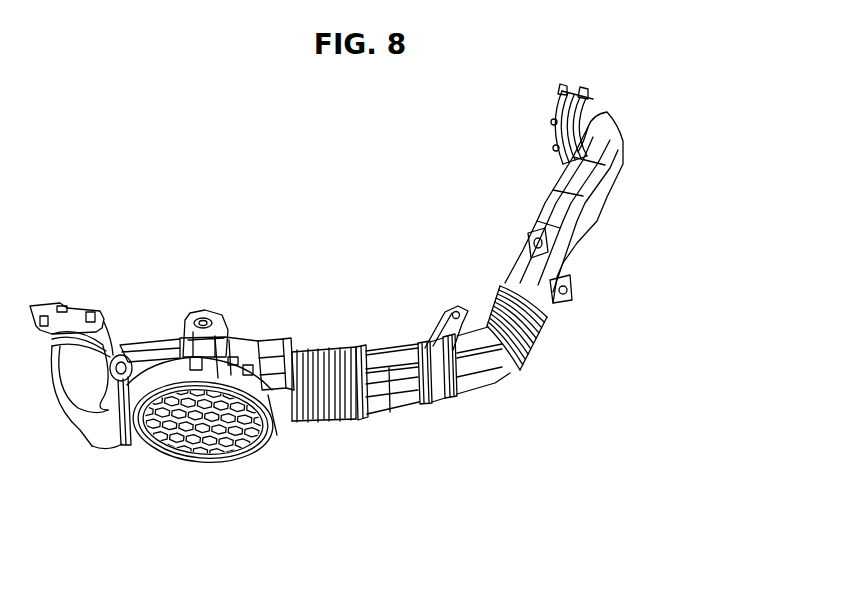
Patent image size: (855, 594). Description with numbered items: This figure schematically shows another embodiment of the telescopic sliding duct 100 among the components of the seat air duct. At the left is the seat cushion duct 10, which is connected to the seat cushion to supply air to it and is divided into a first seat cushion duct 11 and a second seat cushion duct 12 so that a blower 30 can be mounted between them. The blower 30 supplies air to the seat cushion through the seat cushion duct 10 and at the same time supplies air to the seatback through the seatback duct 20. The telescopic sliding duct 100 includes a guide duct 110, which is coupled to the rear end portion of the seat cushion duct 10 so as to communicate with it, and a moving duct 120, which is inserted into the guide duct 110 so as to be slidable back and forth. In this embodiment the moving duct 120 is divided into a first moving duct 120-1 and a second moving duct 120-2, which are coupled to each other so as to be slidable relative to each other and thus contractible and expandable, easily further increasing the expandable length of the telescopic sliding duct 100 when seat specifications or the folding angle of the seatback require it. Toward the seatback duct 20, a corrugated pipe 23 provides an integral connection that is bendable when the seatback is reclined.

The seat cushion duct 10 is at (162, 437).
The first seat cushion duct 11 is at (92, 430).
The second seat cushion duct 12 is at (100, 527).
The seatback duct 20 is at (602, 188).
The corrugated pipe 23 is at (547, 333).
The blower 30 is at (170, 373).
The telescopic sliding duct 100 is at (456, 404).
The guide duct 110 is at (408, 347).
The moving duct 120 is at (453, 428).
The first moving duct 120-1 is at (417, 407).
The second moving duct 120-2 is at (447, 397).